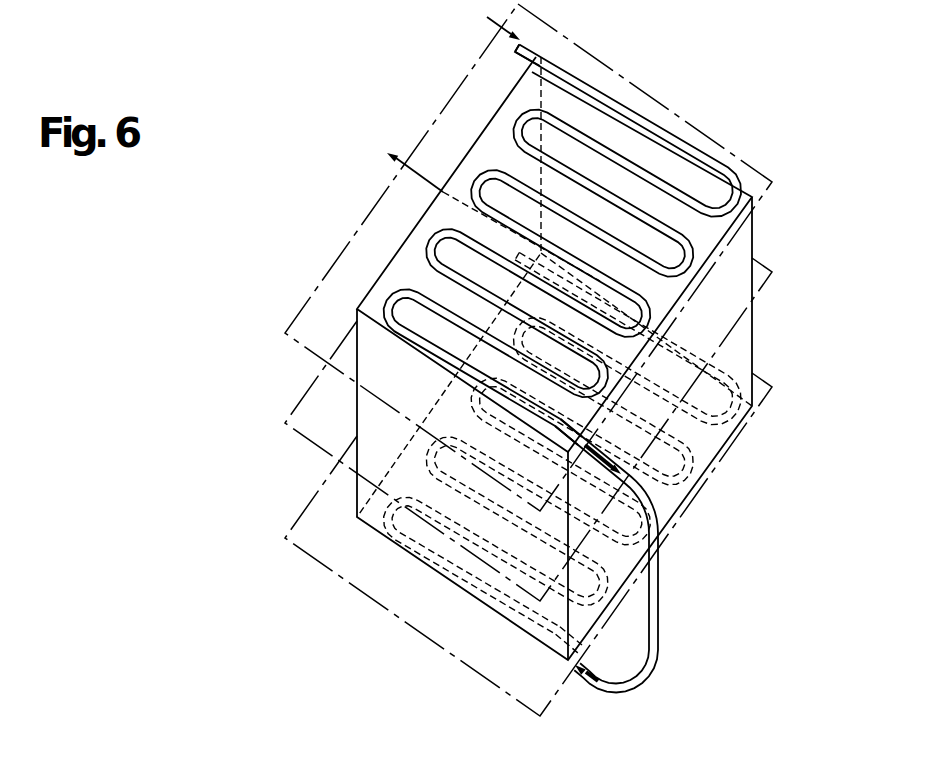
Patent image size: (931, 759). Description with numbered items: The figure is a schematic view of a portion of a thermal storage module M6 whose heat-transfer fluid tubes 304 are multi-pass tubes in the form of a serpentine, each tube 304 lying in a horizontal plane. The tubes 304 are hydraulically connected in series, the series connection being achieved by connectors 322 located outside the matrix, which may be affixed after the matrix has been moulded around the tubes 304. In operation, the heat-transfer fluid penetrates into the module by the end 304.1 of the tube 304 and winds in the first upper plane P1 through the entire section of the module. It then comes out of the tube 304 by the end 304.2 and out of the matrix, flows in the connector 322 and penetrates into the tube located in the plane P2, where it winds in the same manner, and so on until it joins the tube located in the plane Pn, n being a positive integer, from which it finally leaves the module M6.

The thermal storage module M6 is at (322, 163).
The first upper plane P1 is at (318, 330).
The plane P2 is at (318, 425).
The plane Pn is at (320, 537).
The multi-pass type tube 304 is at (697, 140).
The end of the tube 304.1 is at (552, 30).
The end of the tube 304.2 is at (612, 446).
The connector 322 is at (682, 583).